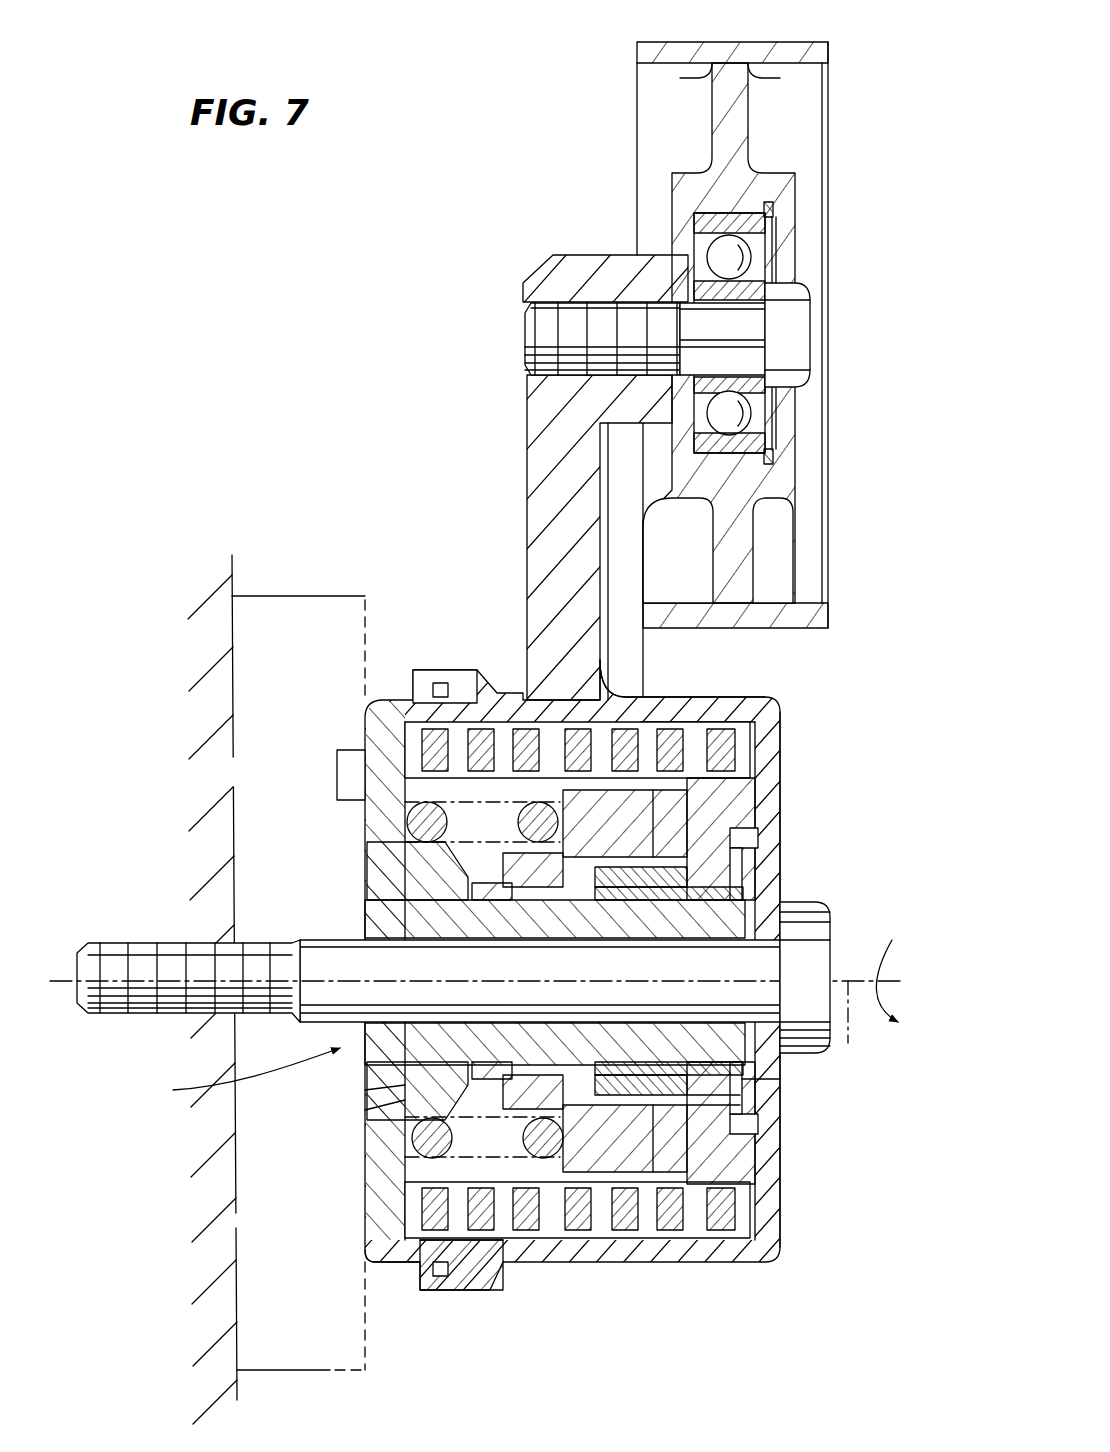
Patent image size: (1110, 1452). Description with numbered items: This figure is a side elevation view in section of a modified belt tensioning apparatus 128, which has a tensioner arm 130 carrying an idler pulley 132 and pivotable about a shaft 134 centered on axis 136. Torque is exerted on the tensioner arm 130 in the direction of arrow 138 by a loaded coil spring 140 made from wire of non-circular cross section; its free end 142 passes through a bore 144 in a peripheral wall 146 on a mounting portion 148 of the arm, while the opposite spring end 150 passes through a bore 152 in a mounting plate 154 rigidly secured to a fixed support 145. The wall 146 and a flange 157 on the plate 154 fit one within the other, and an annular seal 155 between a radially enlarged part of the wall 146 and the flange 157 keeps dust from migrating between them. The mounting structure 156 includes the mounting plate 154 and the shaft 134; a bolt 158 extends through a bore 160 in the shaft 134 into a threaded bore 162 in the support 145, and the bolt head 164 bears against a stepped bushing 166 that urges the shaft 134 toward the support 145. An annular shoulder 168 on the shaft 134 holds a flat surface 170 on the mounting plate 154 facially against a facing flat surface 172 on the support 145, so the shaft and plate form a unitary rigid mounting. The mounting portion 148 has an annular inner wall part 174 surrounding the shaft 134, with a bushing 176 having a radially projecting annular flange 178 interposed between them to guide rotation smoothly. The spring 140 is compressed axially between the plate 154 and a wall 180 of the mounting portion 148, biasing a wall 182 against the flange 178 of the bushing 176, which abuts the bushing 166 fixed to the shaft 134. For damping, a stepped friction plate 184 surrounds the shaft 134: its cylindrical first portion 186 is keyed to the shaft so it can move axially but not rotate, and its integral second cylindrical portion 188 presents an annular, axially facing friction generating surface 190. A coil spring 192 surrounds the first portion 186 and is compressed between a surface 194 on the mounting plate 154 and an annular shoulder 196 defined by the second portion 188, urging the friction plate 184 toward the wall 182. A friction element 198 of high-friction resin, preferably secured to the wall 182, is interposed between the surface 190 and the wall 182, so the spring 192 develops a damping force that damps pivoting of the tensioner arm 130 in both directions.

The belt tensioning apparatus 128 is at (840, 88).
The tensioner arm 130 is at (530, 403).
The idler pulley 132 is at (727, 42).
The shaft 134 is at (365, 915).
The axis 136 is at (881, 1008).
The arrow 138 is at (892, 940).
The coil spring 140 is at (780, 727).
The free end 142 is at (768, 708).
The bore 144 is at (750, 700).
The fixed support 145 is at (298, 983).
The peripheral wall 146 is at (690, 700).
The mounting portion 148 is at (786, 740).
The spring end 150 is at (428, 1247).
The bore 152 is at (450, 1250).
The mounting plate 154 is at (380, 1237).
The annular seal 155 is at (440, 690).
The mounting structure 156 is at (229, 1076).
The flange 157 is at (393, 1240).
The bolt 158 is at (798, 940).
The bore 160 is at (680, 990).
The threaded bore 162 is at (233, 1012).
The bolt head 164 is at (838, 960).
The stepped bushing 166 is at (766, 1079).
The annular shoulder 168 is at (392, 1107).
The flat surface 170 is at (365, 1092).
The flat surface 172 is at (374, 605).
The annular inner wall part 174 is at (687, 1113).
The bushing 176 is at (680, 1093).
The annular flange 178 is at (740, 1093).
The wall 180 is at (757, 1180).
The wall 182 is at (770, 847).
The stepped friction plate 184 is at (612, 1150).
The cylindrical first portion 186 is at (552, 1110).
The second cylindrical portion 188 is at (652, 1165).
The friction generating surface 190 is at (697, 1175).
The coil spring 192 is at (413, 845).
The surface 194 is at (408, 825).
The annular shoulder 196 is at (565, 800).
The friction element 198 is at (720, 712).